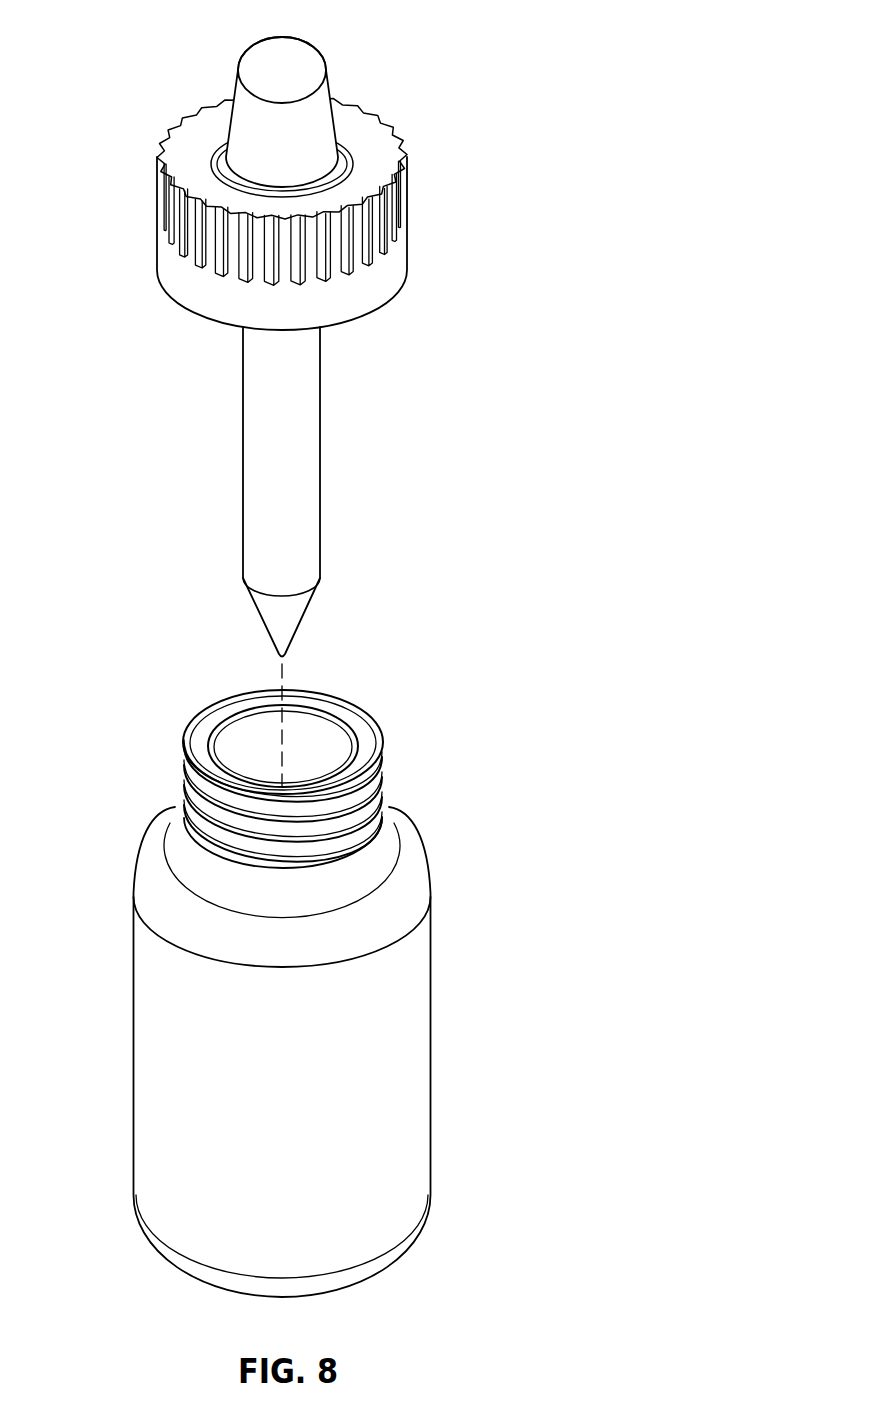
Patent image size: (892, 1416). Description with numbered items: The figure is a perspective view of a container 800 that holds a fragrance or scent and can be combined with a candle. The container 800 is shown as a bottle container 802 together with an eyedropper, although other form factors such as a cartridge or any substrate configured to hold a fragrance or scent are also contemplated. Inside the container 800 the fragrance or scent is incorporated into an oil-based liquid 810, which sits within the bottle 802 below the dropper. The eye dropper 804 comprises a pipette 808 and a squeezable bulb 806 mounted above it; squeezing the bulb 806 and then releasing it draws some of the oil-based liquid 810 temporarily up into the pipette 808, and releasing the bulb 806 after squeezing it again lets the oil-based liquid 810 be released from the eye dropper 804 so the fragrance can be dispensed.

The container 800 is at (583, 78).
The bottle 802 is at (133, 1033).
The eye dropper 804 is at (157, 260).
The squeezable bulb 806 is at (238, 63).
The pipette 808 is at (243, 530).
The oil-based liquid 810 is at (312, 732).